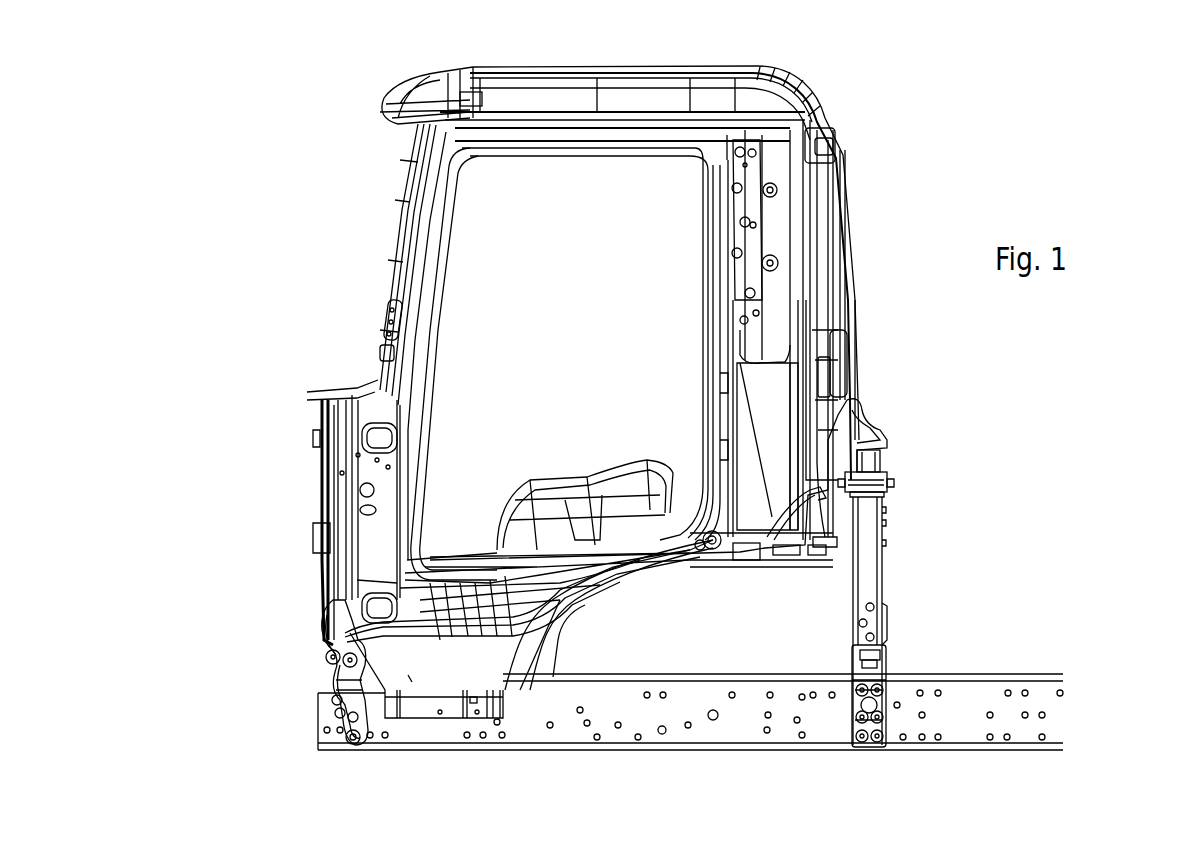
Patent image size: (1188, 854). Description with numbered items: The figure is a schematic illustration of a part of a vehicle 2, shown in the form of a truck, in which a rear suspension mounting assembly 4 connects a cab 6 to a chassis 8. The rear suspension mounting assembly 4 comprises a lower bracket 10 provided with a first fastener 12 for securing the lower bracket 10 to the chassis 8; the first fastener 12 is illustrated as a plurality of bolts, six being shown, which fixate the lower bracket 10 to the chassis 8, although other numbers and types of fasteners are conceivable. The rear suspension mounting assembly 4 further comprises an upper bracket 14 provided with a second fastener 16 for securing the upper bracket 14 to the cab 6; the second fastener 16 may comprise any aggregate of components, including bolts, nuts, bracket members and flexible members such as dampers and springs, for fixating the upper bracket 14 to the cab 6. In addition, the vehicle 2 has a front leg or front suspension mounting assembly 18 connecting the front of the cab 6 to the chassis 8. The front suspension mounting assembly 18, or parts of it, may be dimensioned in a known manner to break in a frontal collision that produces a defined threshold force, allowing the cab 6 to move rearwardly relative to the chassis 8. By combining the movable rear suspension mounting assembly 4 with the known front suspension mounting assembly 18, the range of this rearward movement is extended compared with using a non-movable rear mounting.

The vehicle 2 is at (220, 125).
The rear suspension mounting assembly 4 is at (958, 505).
The cab 6 is at (380, 360).
The chassis 8 is at (1013, 720).
The lower bracket 10 is at (863, 702).
The first fastener 12 is at (862, 734).
The upper bracket 14 is at (878, 550).
The second fastener 16 is at (880, 480).
The front suspension mounting assembly 18 is at (285, 631).